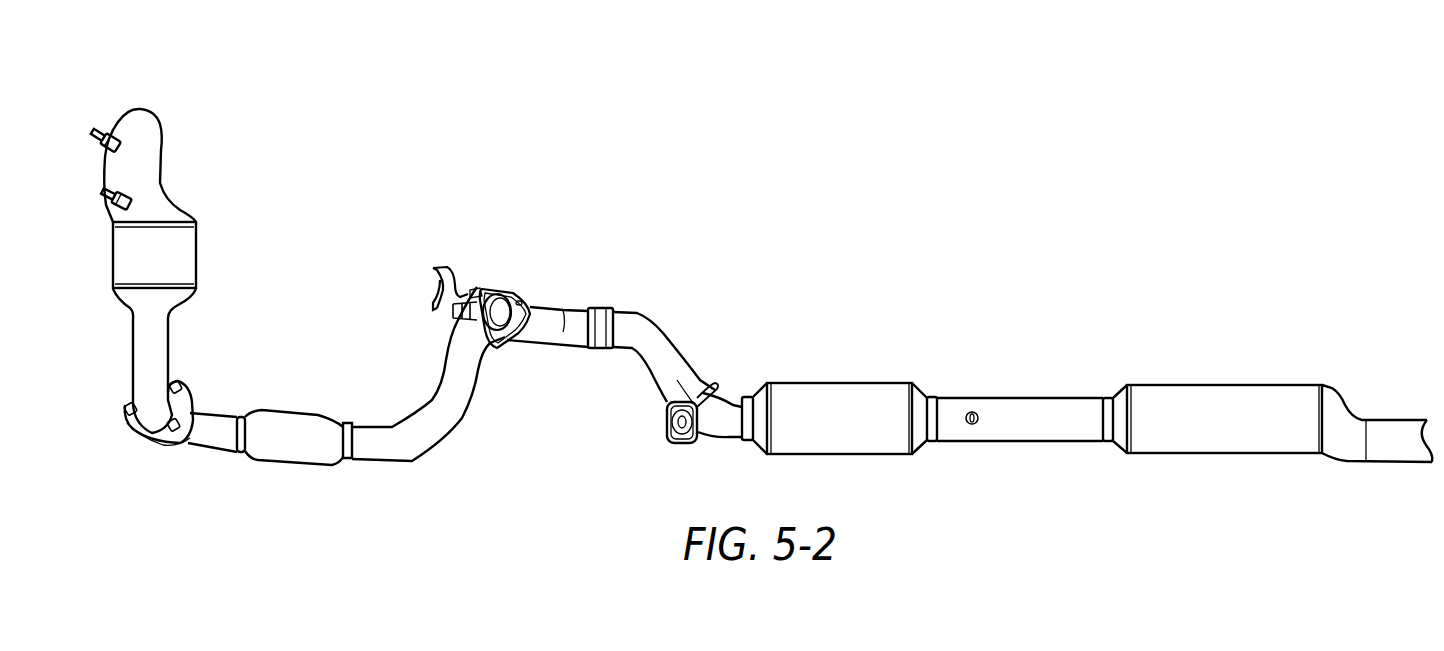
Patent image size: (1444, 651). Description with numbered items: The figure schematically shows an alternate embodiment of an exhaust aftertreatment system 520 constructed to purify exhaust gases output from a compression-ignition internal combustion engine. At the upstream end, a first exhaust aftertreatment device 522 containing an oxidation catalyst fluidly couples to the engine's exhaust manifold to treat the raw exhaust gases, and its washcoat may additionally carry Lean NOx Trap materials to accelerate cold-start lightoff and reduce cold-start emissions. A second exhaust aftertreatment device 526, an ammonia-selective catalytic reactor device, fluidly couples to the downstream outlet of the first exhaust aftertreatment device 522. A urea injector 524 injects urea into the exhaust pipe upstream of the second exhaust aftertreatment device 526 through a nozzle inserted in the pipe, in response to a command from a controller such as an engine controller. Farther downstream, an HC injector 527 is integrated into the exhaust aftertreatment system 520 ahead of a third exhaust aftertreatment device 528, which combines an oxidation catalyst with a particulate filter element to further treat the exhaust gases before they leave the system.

The exhaust aftertreatment system 520 is at (335, 122).
The first exhaust aftertreatment device 522 is at (195, 258).
The urea injector 524 is at (457, 302).
The second exhaust aftertreatment device 526 is at (830, 383).
The HC injector 527 is at (1017, 397).
The third exhaust aftertreatment device 528 is at (1203, 383).